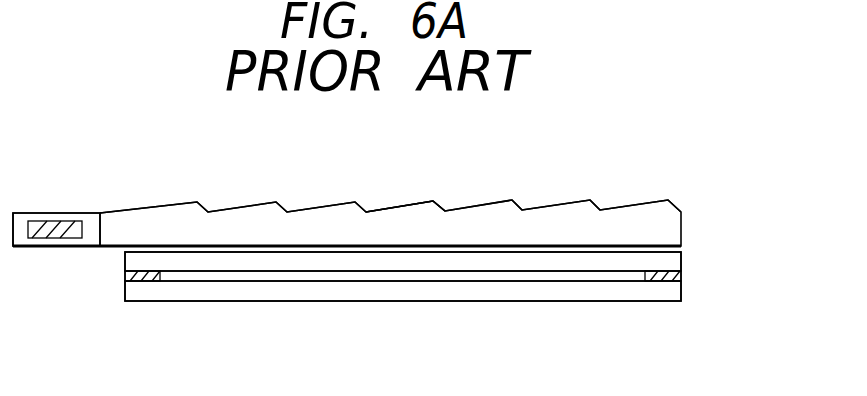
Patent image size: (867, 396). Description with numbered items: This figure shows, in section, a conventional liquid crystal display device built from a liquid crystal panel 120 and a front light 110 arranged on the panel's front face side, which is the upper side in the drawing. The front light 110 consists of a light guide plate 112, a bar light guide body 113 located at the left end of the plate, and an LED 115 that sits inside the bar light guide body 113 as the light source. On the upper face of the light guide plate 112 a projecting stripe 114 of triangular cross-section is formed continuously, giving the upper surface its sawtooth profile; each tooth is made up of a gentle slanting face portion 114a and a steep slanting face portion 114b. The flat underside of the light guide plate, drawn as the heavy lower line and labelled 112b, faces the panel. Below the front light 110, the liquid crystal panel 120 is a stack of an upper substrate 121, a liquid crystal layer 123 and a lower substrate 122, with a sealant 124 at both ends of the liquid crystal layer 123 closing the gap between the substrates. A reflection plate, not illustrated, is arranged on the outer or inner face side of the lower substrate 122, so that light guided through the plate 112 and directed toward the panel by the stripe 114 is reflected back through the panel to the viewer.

The front light 110 is at (675, 222).
The light guide plate 112 is at (109, 218).
The bottom surface of light guide plate 112b is at (507, 245).
The bar light guide body 113 is at (19, 248).
The projecting stripe 114 is at (352, 202).
The gentle slanting face portion 114a is at (404, 205).
The steep slanting face portion 114b is at (440, 208).
The LED 115 is at (53, 220).
The liquid crystal panel 120 is at (125, 292).
The upper substrate 121 is at (420, 260).
The lower substrate 122 is at (472, 292).
The liquid crystal layer 123 is at (243, 277).
The sealant 124 is at (143, 277).